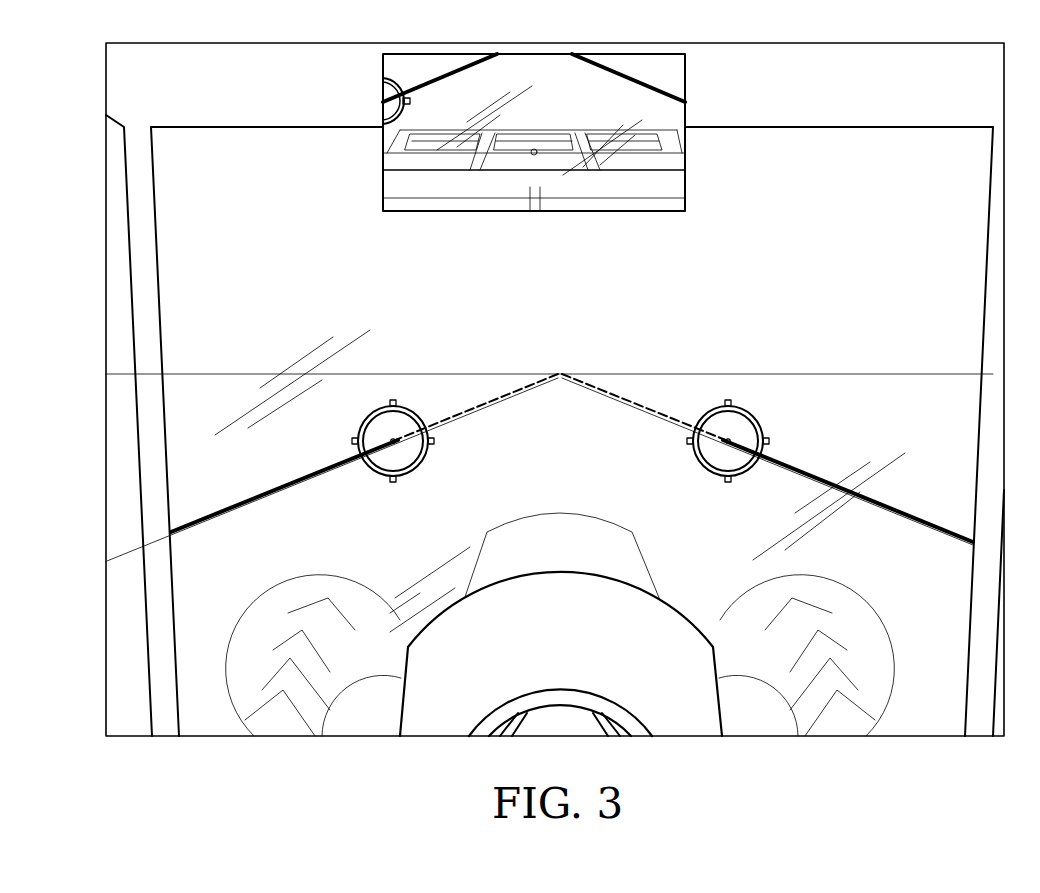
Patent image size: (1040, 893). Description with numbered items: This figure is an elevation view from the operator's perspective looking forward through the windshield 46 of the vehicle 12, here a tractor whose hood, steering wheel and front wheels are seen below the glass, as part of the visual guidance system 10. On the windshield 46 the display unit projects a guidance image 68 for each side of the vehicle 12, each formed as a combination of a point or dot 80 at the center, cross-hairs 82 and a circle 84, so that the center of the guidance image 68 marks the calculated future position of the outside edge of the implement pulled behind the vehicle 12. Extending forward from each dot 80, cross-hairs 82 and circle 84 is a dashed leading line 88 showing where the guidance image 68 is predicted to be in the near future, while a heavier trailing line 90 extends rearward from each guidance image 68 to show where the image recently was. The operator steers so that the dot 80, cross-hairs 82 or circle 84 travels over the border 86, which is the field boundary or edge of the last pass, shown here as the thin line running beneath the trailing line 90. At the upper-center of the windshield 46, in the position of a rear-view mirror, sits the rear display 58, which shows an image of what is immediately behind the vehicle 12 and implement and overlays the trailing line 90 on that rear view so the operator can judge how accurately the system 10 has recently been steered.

The visual guidance system 10 is at (82, 133).
The vehicle 12 is at (544, 498).
The windshield 46 is at (279, 221).
The rear display 58 is at (692, 81).
The guidance image 68 is at (559, 248).
The point or dot 80 is at (392, 439).
The cross-hairs 82 is at (352, 441).
The circle 84 is at (360, 429).
The border 86 is at (232, 513).
The leading line 88 is at (516, 387).
The trailing line 90 is at (202, 517).